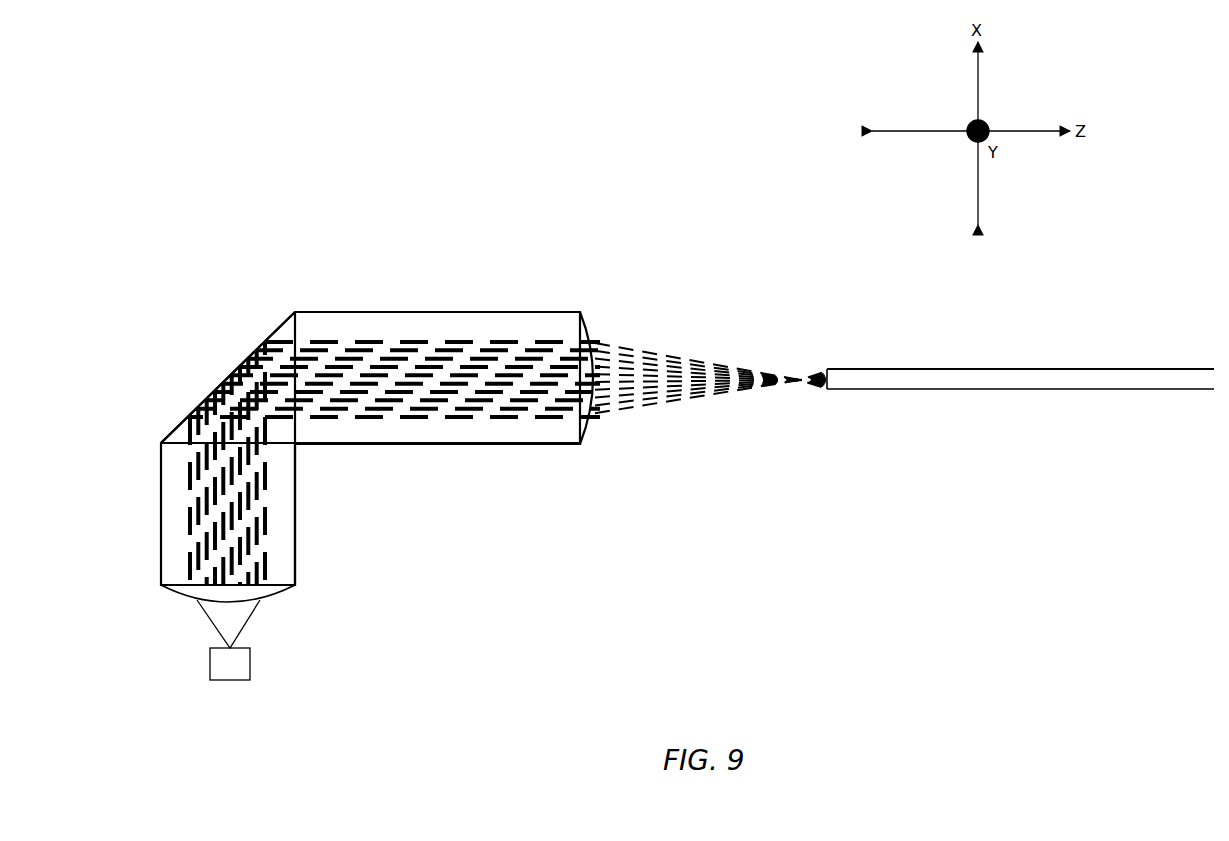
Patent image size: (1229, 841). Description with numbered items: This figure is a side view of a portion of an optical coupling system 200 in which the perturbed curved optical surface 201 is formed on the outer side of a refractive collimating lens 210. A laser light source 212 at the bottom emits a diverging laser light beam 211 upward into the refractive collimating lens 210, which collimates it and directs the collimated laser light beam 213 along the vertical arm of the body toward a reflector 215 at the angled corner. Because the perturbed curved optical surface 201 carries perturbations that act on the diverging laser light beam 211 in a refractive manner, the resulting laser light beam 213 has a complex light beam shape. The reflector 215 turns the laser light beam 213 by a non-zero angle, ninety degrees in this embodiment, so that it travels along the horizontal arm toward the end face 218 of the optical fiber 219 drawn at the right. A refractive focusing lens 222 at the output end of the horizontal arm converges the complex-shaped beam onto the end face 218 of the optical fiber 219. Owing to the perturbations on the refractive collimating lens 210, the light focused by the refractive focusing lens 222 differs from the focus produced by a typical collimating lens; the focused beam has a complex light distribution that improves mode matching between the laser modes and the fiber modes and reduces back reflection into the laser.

The optical coupling system 200 is at (222, 172).
The perturbed curved optical surface 201 is at (283, 590).
The refractive collimating lens 210 is at (283, 592).
The diverging laser light beam 211 is at (205, 612).
The laser light source 212 is at (210, 668).
The laser light beam 213 is at (645, 348).
The reflector 215 is at (278, 320).
The end face 218 is at (826, 370).
The optical fiber 219 is at (947, 382).
The refractive focusing lens 222 is at (590, 428).